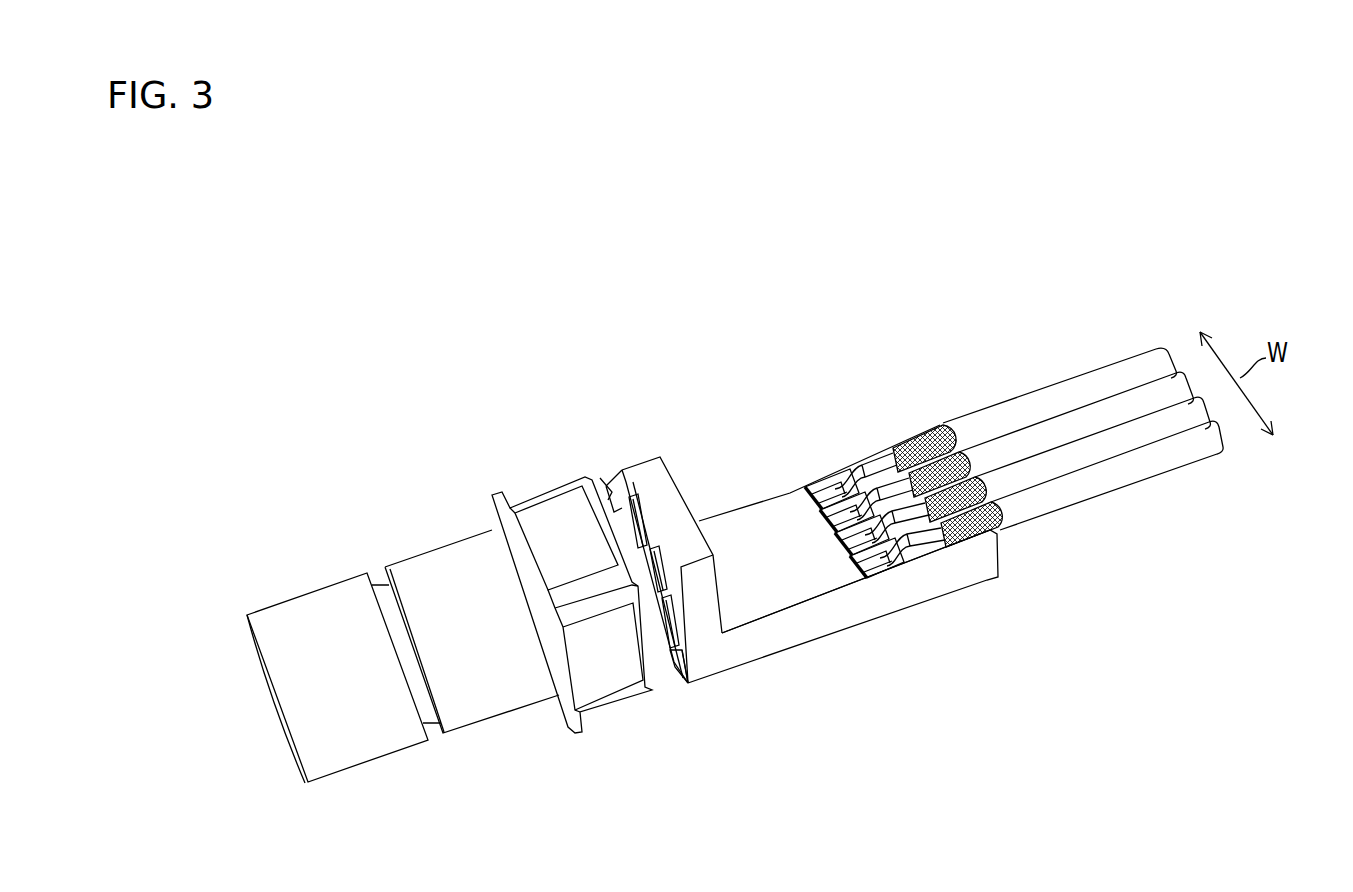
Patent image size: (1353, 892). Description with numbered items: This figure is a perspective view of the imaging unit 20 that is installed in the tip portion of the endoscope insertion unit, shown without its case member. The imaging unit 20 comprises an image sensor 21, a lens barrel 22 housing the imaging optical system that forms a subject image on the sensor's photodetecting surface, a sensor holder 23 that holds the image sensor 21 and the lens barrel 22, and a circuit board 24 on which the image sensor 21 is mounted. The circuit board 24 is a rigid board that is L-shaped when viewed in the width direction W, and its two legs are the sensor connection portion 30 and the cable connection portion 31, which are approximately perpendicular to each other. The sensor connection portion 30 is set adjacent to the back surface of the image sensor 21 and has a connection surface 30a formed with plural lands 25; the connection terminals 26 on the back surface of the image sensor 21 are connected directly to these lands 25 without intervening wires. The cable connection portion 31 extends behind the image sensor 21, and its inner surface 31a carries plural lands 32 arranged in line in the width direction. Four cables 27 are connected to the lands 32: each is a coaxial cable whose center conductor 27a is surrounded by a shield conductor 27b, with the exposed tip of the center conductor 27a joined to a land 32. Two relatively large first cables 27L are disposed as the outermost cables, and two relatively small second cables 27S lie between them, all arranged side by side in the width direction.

The imaging unit 20 is at (351, 374).
The image sensor 21 is at (540, 495).
The lens barrel 22 is at (314, 600).
The sensor holder 23 is at (444, 554).
The circuit board 24 is at (737, 390).
The lands 25 is at (602, 477).
The connection terminals 26 is at (668, 664).
The cables 27 is at (1037, 483).
The first cables 27L is at (1030, 403).
The second cables 27S is at (1107, 410).
The center conductor 27a is at (838, 484).
The shield conductor 27b is at (913, 446).
The sensor connection portion 30 is at (649, 454).
The connection surface 30a is at (620, 477).
The cable connection portion 31 is at (761, 499).
The inner surface 31a is at (746, 613).
The lands 32 is at (815, 487).